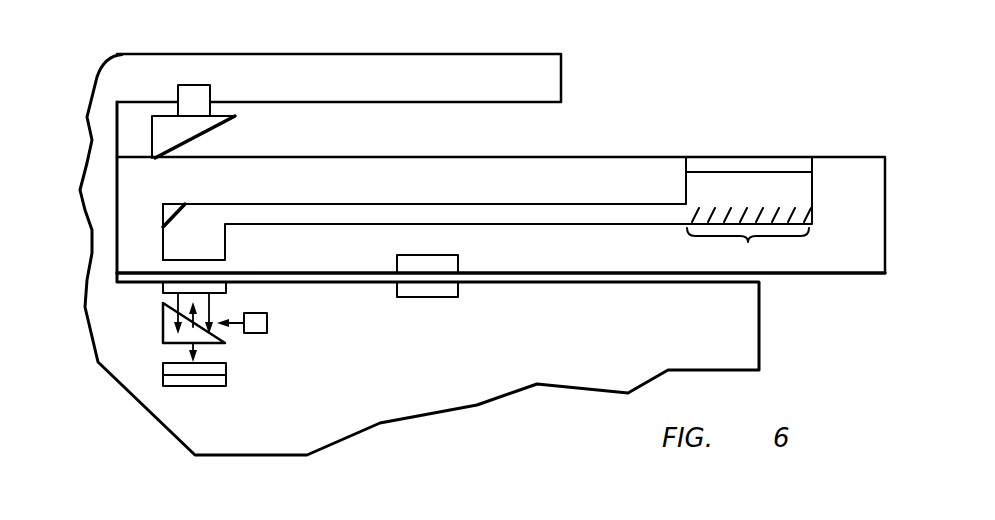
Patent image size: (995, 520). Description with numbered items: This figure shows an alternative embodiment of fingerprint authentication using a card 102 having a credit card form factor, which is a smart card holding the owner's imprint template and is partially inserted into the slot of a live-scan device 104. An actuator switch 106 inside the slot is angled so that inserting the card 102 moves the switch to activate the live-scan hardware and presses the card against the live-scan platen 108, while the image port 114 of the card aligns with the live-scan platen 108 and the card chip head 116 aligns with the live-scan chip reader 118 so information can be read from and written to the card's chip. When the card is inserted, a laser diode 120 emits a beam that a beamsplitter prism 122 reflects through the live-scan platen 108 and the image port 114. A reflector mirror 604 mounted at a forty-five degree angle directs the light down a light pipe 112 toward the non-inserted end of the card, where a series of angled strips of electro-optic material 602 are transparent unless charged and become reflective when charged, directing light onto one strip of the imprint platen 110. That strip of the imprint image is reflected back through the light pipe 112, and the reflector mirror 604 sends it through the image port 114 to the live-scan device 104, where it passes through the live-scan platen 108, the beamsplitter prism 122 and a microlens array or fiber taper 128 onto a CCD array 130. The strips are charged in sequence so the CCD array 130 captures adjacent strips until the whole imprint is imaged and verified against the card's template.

The card 102 is at (851, 155).
The live-scan device 104 is at (353, 54).
The actuator switch 106 is at (180, 97).
The live-scan platen 108 is at (226, 284).
The imprint platen 110 is at (686, 167).
The light pipe 112 is at (572, 210).
The image port 114 is at (226, 267).
The card chip head 116 is at (460, 263).
The live-scan chip reader 118 is at (460, 287).
The laser diode 120 is at (268, 322).
The beamsplitter prism 122 is at (160, 327).
The microlens array or fiber taper 128 is at (221, 370).
The CCD array 130 is at (194, 387).
The strips of electro-optic material 602 is at (749, 238).
The reflector mirror 604 is at (167, 205).